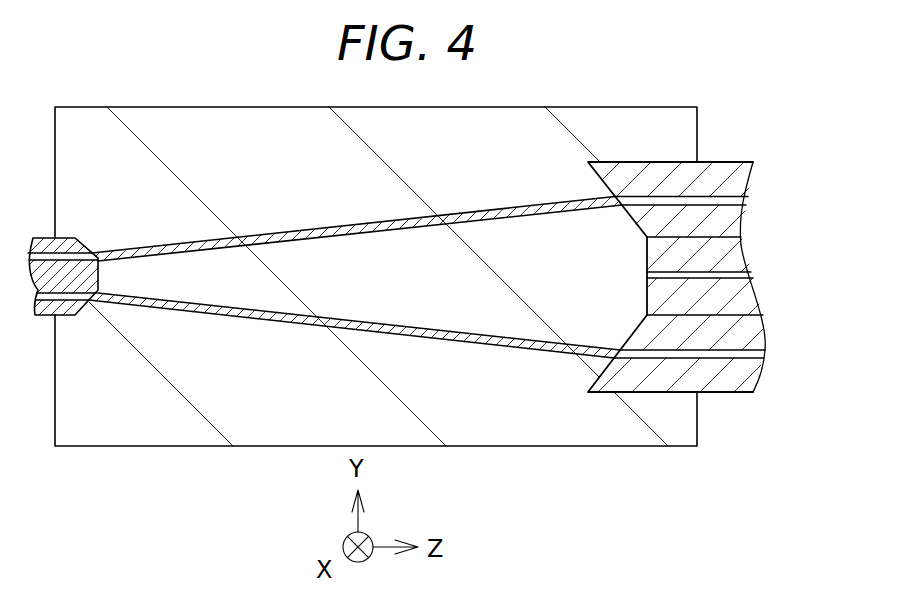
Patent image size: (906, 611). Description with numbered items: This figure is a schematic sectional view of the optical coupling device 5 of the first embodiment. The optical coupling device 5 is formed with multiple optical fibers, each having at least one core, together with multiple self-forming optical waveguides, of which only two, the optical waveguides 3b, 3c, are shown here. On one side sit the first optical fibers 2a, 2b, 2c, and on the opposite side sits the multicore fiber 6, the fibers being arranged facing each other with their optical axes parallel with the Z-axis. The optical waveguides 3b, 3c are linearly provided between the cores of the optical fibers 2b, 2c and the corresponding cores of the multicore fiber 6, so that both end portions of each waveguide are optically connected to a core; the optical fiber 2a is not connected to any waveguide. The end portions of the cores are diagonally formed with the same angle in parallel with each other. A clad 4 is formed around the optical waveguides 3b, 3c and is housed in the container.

The optical fiber 2a is at (715, 302).
The optical fiber 2b is at (725, 178).
The optical fiber 2c is at (720, 378).
The self-forming optical waveguide 3b is at (493, 208).
The self-forming optical waveguide 3c is at (493, 348).
The clad 4 is at (142, 398).
The optical coupling device 5 is at (547, 468).
The multicore fiber 6 is at (81, 233).